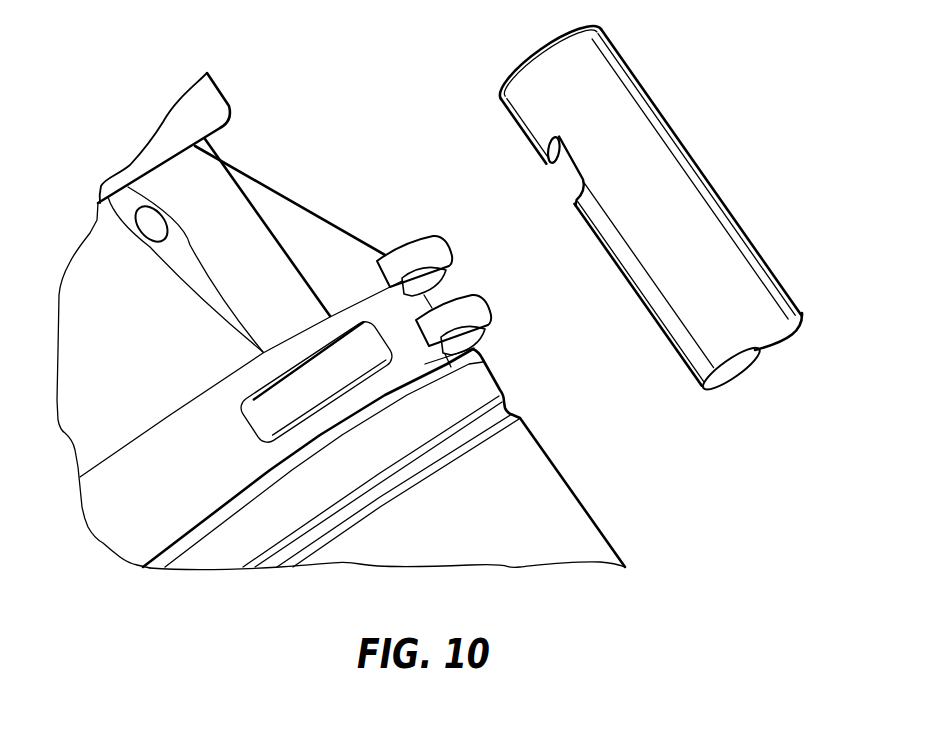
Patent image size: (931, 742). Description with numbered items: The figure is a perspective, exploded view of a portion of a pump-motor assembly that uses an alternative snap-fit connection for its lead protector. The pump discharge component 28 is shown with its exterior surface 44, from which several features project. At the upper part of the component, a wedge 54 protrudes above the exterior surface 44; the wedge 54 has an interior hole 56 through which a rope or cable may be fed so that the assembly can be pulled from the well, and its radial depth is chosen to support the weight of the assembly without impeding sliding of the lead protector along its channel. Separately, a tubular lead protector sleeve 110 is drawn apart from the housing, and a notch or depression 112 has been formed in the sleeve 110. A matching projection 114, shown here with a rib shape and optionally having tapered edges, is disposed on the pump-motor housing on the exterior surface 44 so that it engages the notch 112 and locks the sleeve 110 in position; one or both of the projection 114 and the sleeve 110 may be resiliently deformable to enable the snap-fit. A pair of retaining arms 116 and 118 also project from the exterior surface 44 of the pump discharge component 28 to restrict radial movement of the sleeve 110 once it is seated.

The pump discharge component 28 is at (313, 218).
The exterior surface 44 is at (162, 500).
The wedge 54 is at (175, 260).
The interior hole 56 is at (155, 220).
The tubular lead protector sleeve 110 is at (668, 163).
The notch 112 is at (557, 162).
The projection 114 is at (263, 397).
The retaining arm 116 is at (437, 248).
The retaining arm 118 is at (478, 309).